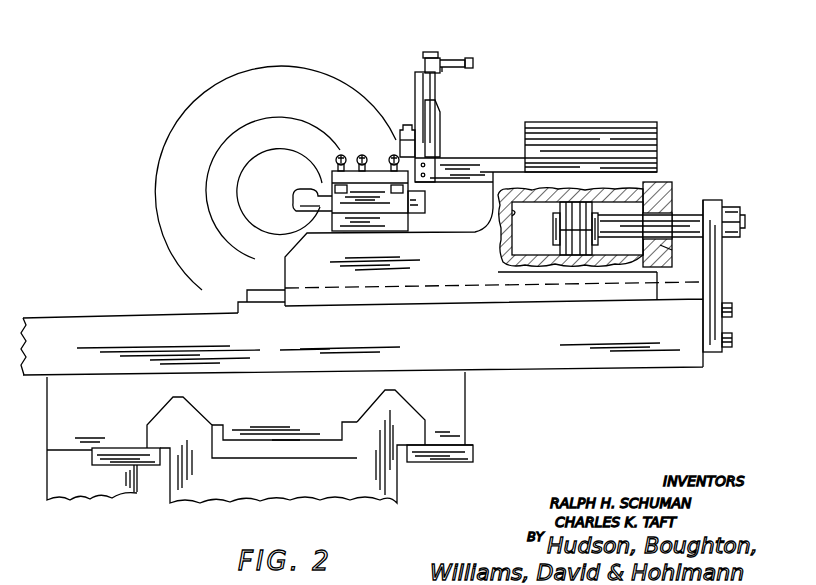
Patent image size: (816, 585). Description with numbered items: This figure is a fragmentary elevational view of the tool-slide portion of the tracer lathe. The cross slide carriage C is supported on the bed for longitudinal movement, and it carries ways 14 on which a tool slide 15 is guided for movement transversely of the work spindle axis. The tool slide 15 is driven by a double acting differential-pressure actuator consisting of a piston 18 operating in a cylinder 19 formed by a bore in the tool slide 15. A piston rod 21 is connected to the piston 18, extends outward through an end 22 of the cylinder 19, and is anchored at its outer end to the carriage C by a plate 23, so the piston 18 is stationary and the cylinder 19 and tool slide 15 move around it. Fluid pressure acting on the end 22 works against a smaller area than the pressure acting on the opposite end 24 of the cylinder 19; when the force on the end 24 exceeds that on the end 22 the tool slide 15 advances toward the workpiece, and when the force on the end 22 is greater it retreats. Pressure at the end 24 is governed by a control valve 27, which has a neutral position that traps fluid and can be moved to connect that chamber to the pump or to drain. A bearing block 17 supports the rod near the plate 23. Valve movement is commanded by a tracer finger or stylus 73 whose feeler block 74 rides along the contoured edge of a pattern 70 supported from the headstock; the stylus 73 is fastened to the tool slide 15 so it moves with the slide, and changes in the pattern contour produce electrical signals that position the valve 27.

The ways 14 is at (238, 297).
The tool slide 15 is at (455, 263).
The bearing block 17 is at (645, 189).
The piston 18 is at (578, 252).
The cylinder 19 is at (540, 250).
The piston rod 21 is at (692, 217).
The end of the cylinder 22 is at (672, 252).
The plate 23 is at (722, 282).
The opposite end of the cylinder 24 is at (503, 217).
The control valve 27 is at (617, 124).
The pattern 70 is at (470, 60).
The tracer finger or stylus 73 is at (433, 98).
The feeler block 74 is at (438, 60).
The cross slide carriage C is at (480, 350).